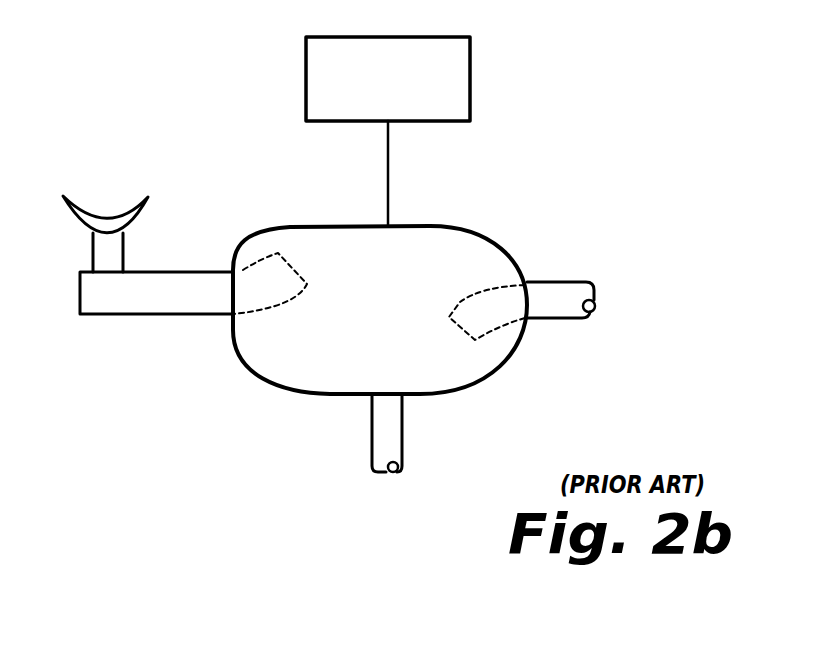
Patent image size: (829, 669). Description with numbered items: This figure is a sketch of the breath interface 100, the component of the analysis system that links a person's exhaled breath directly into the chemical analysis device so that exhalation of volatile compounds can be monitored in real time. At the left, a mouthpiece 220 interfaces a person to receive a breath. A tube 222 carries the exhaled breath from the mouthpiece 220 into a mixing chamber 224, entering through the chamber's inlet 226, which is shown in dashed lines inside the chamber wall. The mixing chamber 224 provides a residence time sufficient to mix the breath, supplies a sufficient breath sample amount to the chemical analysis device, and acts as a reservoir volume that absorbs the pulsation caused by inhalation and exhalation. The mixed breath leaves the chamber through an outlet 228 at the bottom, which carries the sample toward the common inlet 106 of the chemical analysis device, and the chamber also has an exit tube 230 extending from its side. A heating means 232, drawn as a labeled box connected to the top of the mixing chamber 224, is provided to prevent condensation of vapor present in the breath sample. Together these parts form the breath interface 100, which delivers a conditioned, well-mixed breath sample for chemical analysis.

The breath interface 100 is at (576, 179).
The common inlet 106 is at (422, 444).
The mouthpiece 220 is at (126, 180).
The tube 222 is at (168, 271).
The mixing chamber 224 is at (317, 226).
The inlet 226 is at (261, 342).
The outlet 228 is at (460, 433).
The exit tube 230 is at (562, 281).
The heating means 232 is at (472, 55).